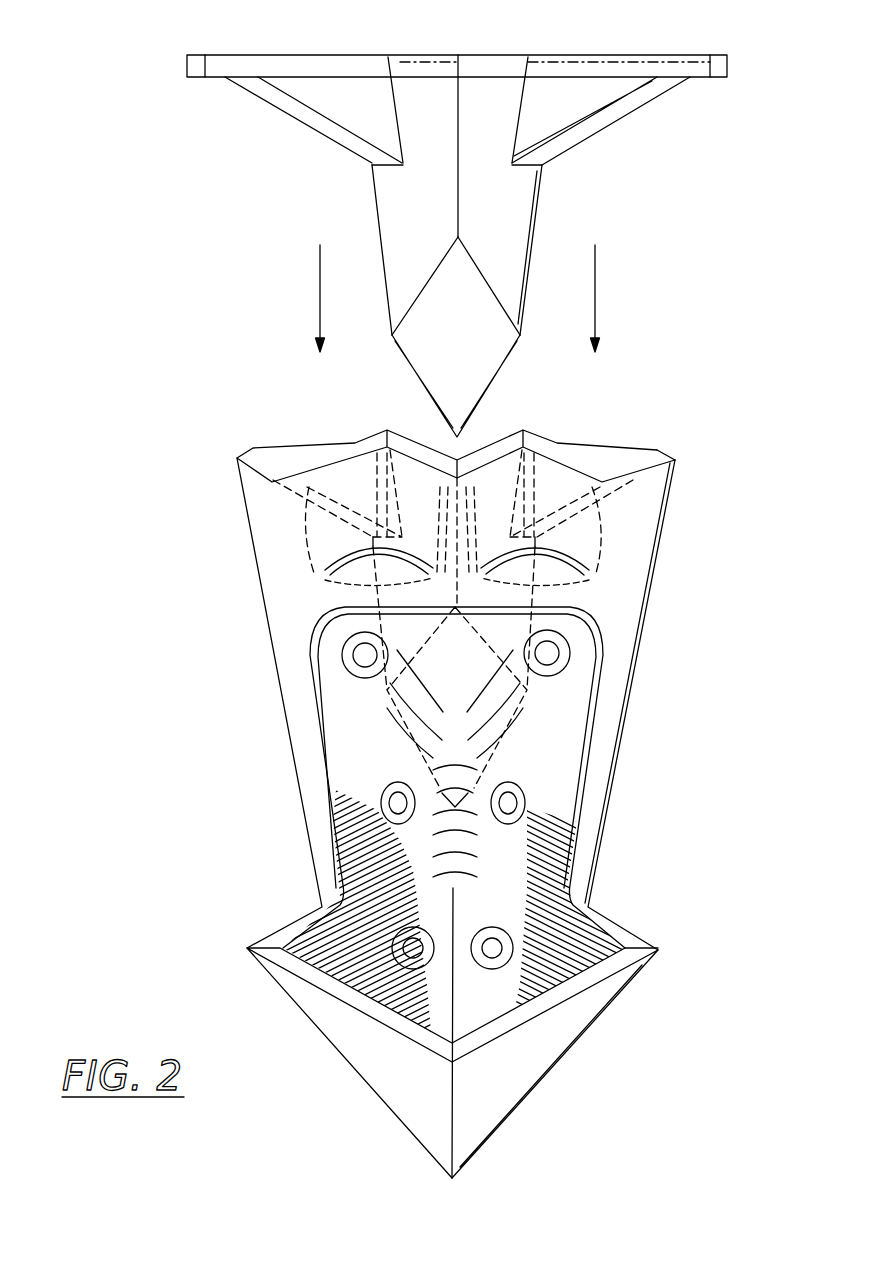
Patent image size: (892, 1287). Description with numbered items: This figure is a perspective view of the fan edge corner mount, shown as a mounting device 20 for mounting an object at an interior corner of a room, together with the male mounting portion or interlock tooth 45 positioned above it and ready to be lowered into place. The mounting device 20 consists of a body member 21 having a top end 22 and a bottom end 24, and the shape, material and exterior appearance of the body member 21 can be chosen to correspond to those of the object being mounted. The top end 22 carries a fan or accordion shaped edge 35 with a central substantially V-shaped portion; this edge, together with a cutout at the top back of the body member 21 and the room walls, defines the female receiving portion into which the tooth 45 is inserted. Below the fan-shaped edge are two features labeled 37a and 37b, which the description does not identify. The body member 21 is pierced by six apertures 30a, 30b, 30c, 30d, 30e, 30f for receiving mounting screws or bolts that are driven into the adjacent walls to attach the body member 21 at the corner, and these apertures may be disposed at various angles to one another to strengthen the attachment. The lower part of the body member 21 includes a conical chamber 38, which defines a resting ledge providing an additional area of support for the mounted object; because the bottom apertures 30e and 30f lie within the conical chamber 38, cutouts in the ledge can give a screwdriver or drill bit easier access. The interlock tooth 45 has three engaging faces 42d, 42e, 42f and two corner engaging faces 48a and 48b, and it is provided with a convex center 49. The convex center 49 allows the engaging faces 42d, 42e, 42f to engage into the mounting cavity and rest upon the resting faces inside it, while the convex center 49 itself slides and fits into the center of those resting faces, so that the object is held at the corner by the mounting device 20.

The mounting device 20 is at (694, 717).
The body member 21 is at (632, 685).
The top end 22 is at (675, 459).
The bottom end 24 is at (583, 1033).
The aperture 30a is at (379, 634).
The aperture 30b is at (528, 634).
The aperture 30c is at (397, 782).
The aperture 30d is at (510, 782).
The bottom aperture 30e is at (434, 934).
The bottom aperture 30f is at (484, 934).
The fan or accordion shaped edge 35 is at (570, 445).
The recess 37a is at (360, 572).
The recess 37b is at (557, 570).
The conical chamber 38 is at (471, 990).
The engaging face 42d is at (477, 344).
The engaging face 42e is at (438, 243).
The engaging face 42f is at (522, 243).
The male mounting portion 45 is at (698, 203).
The corner engaging face 48a is at (320, 123).
The corner engaging face 48b is at (617, 118).
The convex center 49 is at (458, 202).